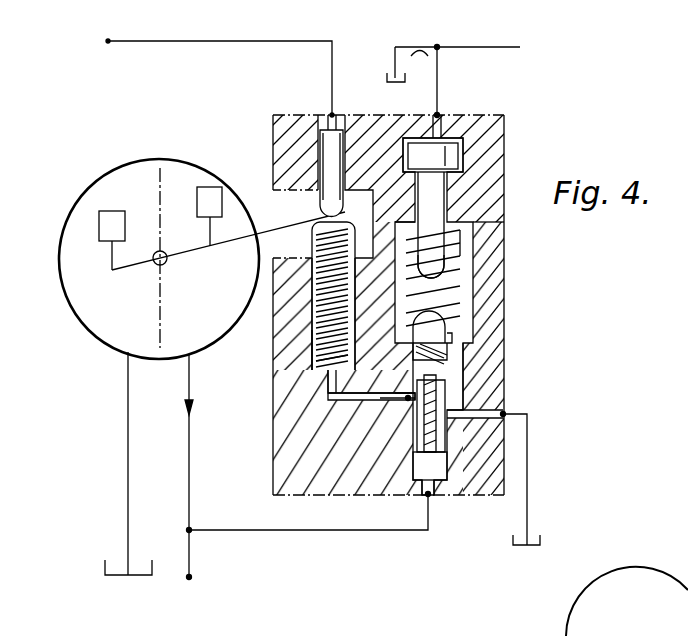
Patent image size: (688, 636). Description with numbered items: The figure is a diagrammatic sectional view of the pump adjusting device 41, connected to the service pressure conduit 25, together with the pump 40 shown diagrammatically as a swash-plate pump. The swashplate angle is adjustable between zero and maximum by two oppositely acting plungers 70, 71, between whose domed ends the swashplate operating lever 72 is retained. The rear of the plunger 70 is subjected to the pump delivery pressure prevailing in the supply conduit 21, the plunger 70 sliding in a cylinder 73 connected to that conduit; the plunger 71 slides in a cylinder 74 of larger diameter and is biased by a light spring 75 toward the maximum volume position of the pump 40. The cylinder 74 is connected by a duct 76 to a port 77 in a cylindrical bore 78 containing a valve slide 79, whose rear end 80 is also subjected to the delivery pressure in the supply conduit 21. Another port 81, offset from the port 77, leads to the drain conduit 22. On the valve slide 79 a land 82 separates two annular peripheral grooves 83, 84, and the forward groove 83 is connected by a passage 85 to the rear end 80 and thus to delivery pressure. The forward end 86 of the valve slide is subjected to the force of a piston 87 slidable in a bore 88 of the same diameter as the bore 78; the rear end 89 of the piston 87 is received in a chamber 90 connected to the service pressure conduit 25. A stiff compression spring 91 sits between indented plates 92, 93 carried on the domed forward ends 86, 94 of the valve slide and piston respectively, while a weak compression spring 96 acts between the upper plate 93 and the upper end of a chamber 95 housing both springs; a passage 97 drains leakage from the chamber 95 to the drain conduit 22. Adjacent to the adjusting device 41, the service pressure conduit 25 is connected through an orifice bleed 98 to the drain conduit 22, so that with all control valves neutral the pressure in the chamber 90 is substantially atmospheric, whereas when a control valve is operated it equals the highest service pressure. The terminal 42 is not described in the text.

The supply conduit 21 is at (215, 46).
The drain conduit 22 is at (395, 66).
The service pressure conduit 25 is at (493, 47).
The pump 40 is at (185, 160).
The pump adjusting device 41 is at (276, 400).
The terminal 42 is at (110, 576).
The plunger 70 is at (318, 206).
The plunger 71 is at (313, 243).
The swashplate operating lever 72 is at (263, 235).
The cylinder 73 is at (328, 133).
The cylinder 74 is at (312, 343).
The light spring 75 is at (318, 365).
The duct 76 is at (330, 400).
The port 77 is at (412, 400).
The cylindrical bore 78 is at (428, 496).
The valve slide 79 is at (447, 462).
The rear end of valve slide 80 is at (428, 470).
The port 81 is at (470, 397).
The land 82 is at (407, 403).
The forward groove 83 is at (465, 388).
The annular peripheral groove 84 is at (418, 455).
The passage 85 is at (505, 414).
The forward end of valve slide 86 is at (445, 333).
The piston 87 is at (447, 210).
The bore 88 is at (462, 190).
The rear end of piston 89 is at (417, 153).
The chamber 90 is at (443, 141).
The stiff compression spring 91 is at (458, 298).
The indented plate 92 is at (463, 315).
The indented plate 93 is at (450, 275).
The forward end of piston 94 is at (470, 248).
The chamber 95 is at (450, 257).
The weak compression spring 96 is at (490, 235).
The passage 97 is at (455, 365).
The orifice bleed 98 is at (412, 40).